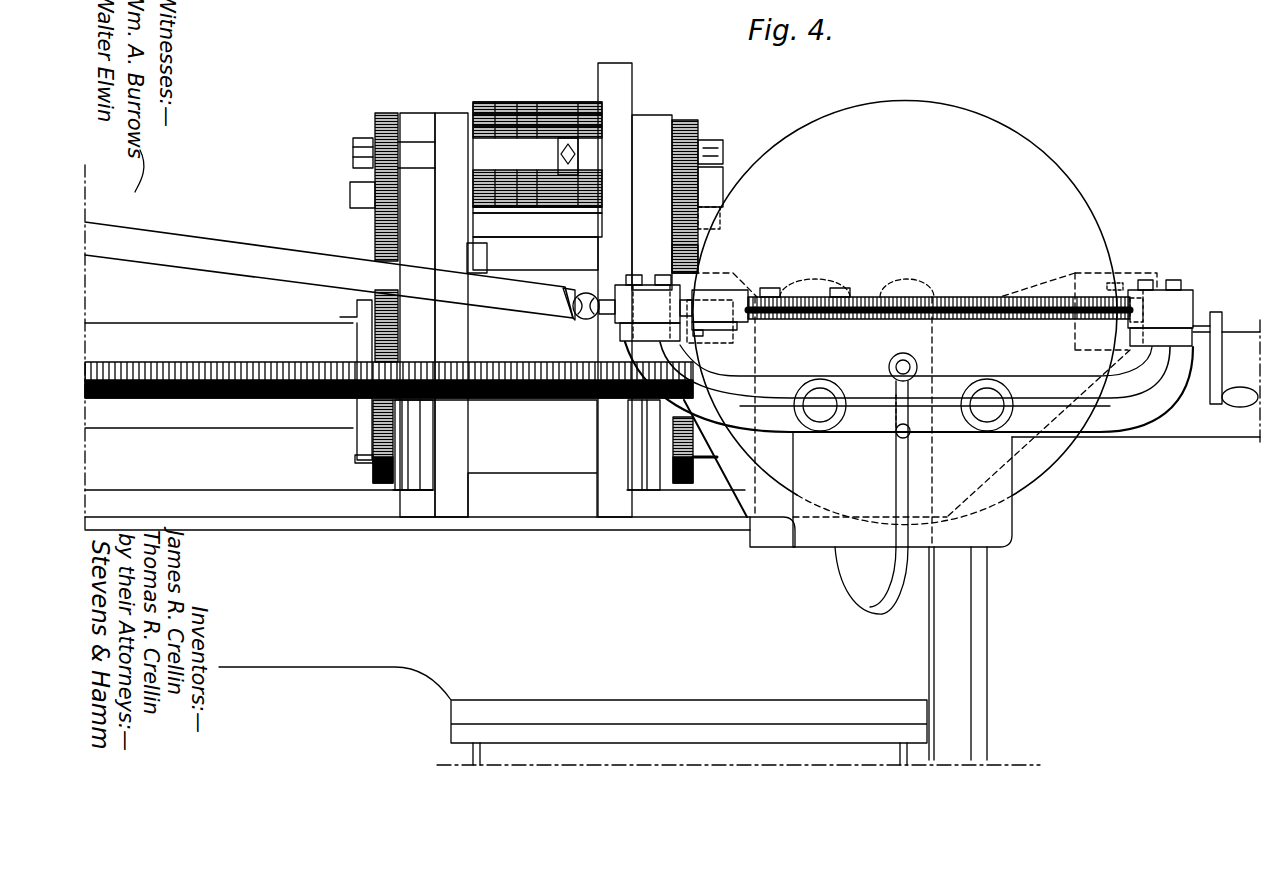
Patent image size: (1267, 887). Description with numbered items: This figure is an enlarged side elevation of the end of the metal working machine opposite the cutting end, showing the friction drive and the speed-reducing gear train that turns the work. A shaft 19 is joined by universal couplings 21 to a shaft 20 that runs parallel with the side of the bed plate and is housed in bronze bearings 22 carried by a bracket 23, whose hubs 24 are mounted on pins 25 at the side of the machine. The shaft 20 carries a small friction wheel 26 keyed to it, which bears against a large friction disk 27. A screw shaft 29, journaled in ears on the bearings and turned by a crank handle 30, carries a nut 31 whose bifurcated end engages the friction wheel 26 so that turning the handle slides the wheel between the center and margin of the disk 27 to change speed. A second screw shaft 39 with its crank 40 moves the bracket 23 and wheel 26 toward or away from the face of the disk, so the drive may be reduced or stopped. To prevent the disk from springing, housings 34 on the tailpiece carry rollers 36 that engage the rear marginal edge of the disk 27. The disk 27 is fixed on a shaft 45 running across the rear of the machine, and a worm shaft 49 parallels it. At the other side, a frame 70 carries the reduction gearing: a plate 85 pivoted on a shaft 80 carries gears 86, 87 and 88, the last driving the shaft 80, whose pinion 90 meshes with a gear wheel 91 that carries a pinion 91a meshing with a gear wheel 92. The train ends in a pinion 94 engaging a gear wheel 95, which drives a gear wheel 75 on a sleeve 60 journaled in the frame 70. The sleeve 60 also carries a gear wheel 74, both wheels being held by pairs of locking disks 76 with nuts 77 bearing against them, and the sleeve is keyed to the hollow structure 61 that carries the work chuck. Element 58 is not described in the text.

The shaft 19 is at (329, 270).
The shaft 20 is at (978, 320).
The universal couplings 21 is at (585, 319).
The bronze bearings 22 is at (904, 310).
The bracket 23 is at (1168, 392).
The hubs 24 is at (994, 380).
The pins 25 is at (903, 405).
The friction wheel 26 is at (737, 333).
The friction disk 27 is at (1030, 136).
The screw shaft 29 is at (848, 322).
The crank handle 30 is at (1222, 326).
The nut 31 is at (714, 316).
The housings 34 is at (1082, 272).
The rollers 36 is at (1115, 332).
The screw shaft 39 is at (896, 362).
The crank 40 is at (898, 434).
The shaft 45 is at (912, 297).
The worm shaft 49 is at (810, 297).
The rack teeth 58 is at (182, 368).
The sleeve 60 is at (356, 452).
The hollow structure 61 is at (389, 401).
The frame 70 is at (548, 272).
The gear wheel 74 is at (694, 478).
The gear wheel 75 is at (386, 487).
The locking disks 76 is at (640, 456).
The nuts 77 is at (717, 458).
The shaft 80 is at (537, 169).
The plate 85 is at (652, 202).
The gear 86 is at (700, 262).
The gear 87 is at (718, 214).
The gear 88 is at (698, 122).
The pinion 90 is at (602, 141).
The gear wheel 91 is at (592, 102).
The pinion 91a is at (553, 102).
The gear wheel 92 is at (575, 100).
The pinion 94 is at (375, 124).
The gear wheel 95 is at (375, 237).